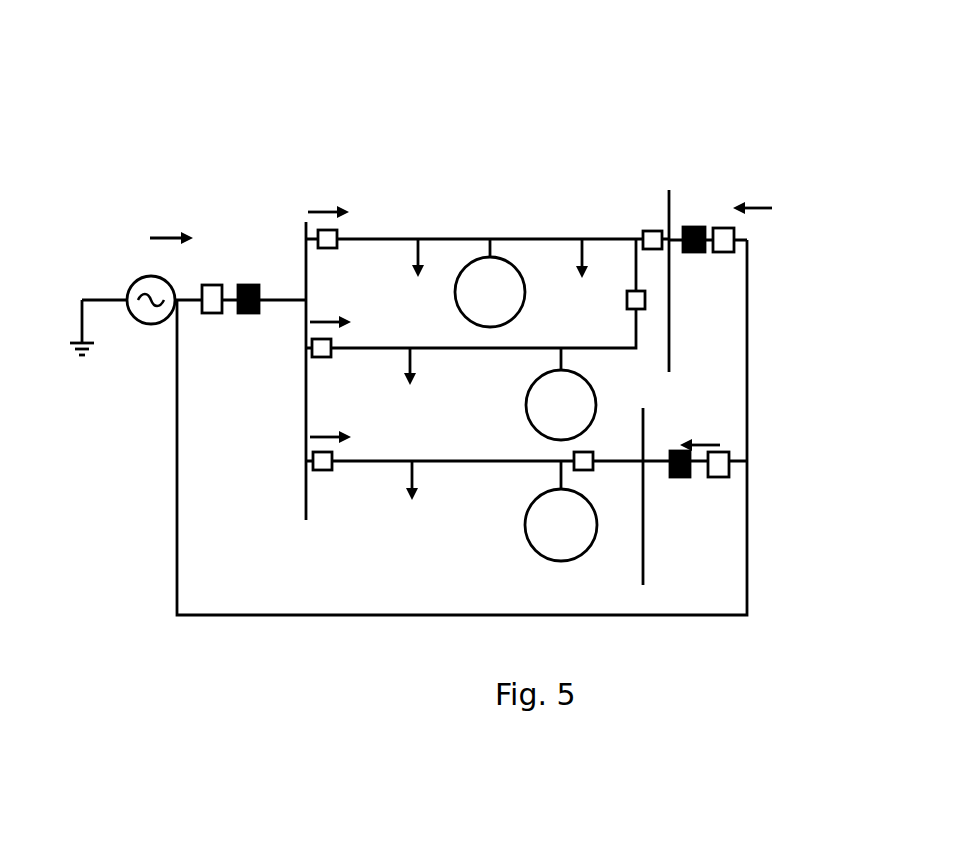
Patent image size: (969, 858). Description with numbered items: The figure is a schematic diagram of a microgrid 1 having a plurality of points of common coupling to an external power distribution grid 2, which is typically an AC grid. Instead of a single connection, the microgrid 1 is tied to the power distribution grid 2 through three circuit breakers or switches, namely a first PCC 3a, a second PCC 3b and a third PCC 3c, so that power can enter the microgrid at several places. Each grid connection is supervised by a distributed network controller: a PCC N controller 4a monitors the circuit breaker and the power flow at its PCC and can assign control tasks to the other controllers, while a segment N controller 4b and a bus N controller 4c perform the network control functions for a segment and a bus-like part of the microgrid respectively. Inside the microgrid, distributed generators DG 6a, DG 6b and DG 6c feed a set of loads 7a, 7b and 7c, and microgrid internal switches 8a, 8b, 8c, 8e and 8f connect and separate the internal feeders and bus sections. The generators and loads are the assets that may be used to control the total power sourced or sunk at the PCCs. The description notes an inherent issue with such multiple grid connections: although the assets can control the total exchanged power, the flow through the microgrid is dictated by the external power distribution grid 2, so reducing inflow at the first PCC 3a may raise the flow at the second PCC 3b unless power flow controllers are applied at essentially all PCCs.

The microgrid 1 is at (790, 100).
The power distribution grid 2 is at (150, 324).
The first PCC 3a is at (212, 314).
The second PCC 3b is at (735, 232).
The PCC 3c is at (718, 477).
The PCC N controller 4a is at (248, 314).
The segment N controller 4b is at (694, 227).
The bus N controller 4c is at (680, 477).
The DG 6a is at (490, 257).
The DG 6b is at (536, 430).
The DG 6c is at (536, 551).
The load 7a is at (375, 309).
The load 7b is at (390, 414).
The load 7c is at (392, 531).
The internal switch 8a is at (338, 232).
The internal switch 8b is at (333, 343).
The internal switch 8c is at (333, 458).
The internal switch 8e is at (645, 232).
The internal switch 8f is at (592, 452).